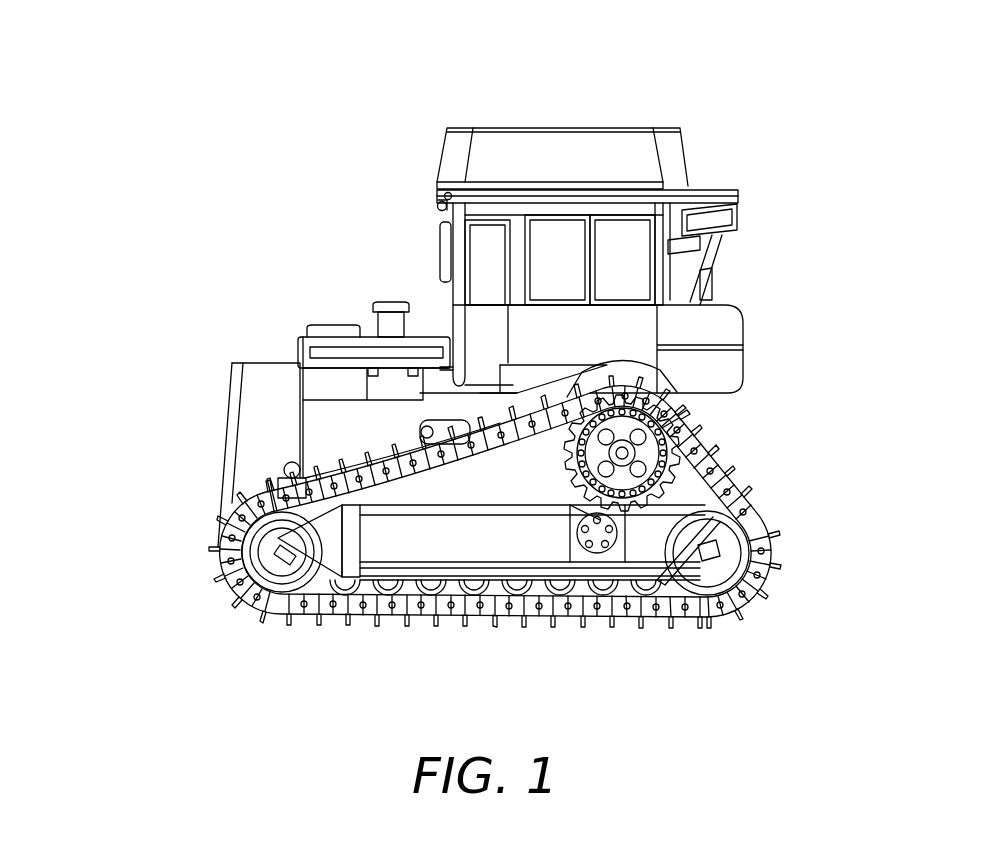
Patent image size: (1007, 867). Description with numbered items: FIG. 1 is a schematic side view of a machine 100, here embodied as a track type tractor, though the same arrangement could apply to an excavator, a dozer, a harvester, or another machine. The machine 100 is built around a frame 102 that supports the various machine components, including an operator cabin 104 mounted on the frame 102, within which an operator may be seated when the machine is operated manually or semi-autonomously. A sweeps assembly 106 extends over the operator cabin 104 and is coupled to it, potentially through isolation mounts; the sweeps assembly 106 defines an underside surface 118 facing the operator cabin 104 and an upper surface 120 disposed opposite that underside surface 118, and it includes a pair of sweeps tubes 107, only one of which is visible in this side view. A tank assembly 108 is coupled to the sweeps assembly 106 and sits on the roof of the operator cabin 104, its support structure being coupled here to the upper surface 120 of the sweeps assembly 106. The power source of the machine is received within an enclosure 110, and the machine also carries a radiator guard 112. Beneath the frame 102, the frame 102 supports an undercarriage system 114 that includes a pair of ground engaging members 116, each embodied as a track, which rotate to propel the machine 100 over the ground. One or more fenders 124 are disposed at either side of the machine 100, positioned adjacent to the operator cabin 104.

The machine 100 is at (912, 84).
The frame 102 is at (481, 420).
The operator cabin 104 is at (605, 252).
The sweeps assembly 106 is at (434, 187).
The sweeps tube 107 is at (480, 203).
The tank assembly 108 is at (434, 140).
The enclosure 110 is at (333, 407).
The radiator guard 112 is at (222, 435).
The undercarriage system 114 is at (209, 560).
The ground engaging member 116 is at (590, 640).
The underside surface 118 is at (668, 236).
The upper surface 120 is at (655, 235).
The fender 124 is at (560, 335).